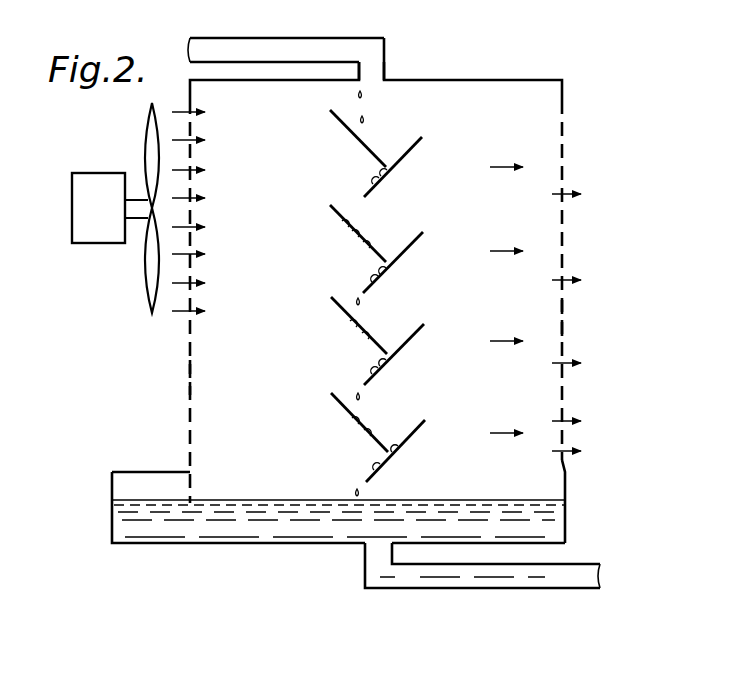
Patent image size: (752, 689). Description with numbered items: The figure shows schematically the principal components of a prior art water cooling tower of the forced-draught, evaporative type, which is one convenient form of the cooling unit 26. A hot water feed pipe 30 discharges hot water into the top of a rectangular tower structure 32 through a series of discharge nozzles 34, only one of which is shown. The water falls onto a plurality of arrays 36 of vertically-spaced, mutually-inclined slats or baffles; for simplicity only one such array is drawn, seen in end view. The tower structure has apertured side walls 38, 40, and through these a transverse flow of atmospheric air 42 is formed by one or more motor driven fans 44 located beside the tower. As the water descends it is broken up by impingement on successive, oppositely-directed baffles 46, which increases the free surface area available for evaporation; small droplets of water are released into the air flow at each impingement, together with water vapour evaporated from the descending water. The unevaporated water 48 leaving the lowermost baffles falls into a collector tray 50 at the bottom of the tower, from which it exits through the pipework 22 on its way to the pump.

The pipework 22 is at (560, 582).
The cooling unit 26 is at (594, 112).
The hot water feed pipe 30 is at (267, 37).
The tower structure 32 is at (530, 78).
The discharge nozzles 34 is at (373, 65).
The arrays of slats or baffles 36 is at (338, 328).
The apertured side wall 38 is at (190, 375).
The apertured side wall 40 is at (563, 323).
The transverse flow of atmospheric air 42 is at (198, 113).
The motor driven fan 44 is at (145, 297).
The baffles 46 is at (383, 270).
The unevaporated water 48 is at (357, 490).
The collector tray 50 is at (552, 525).